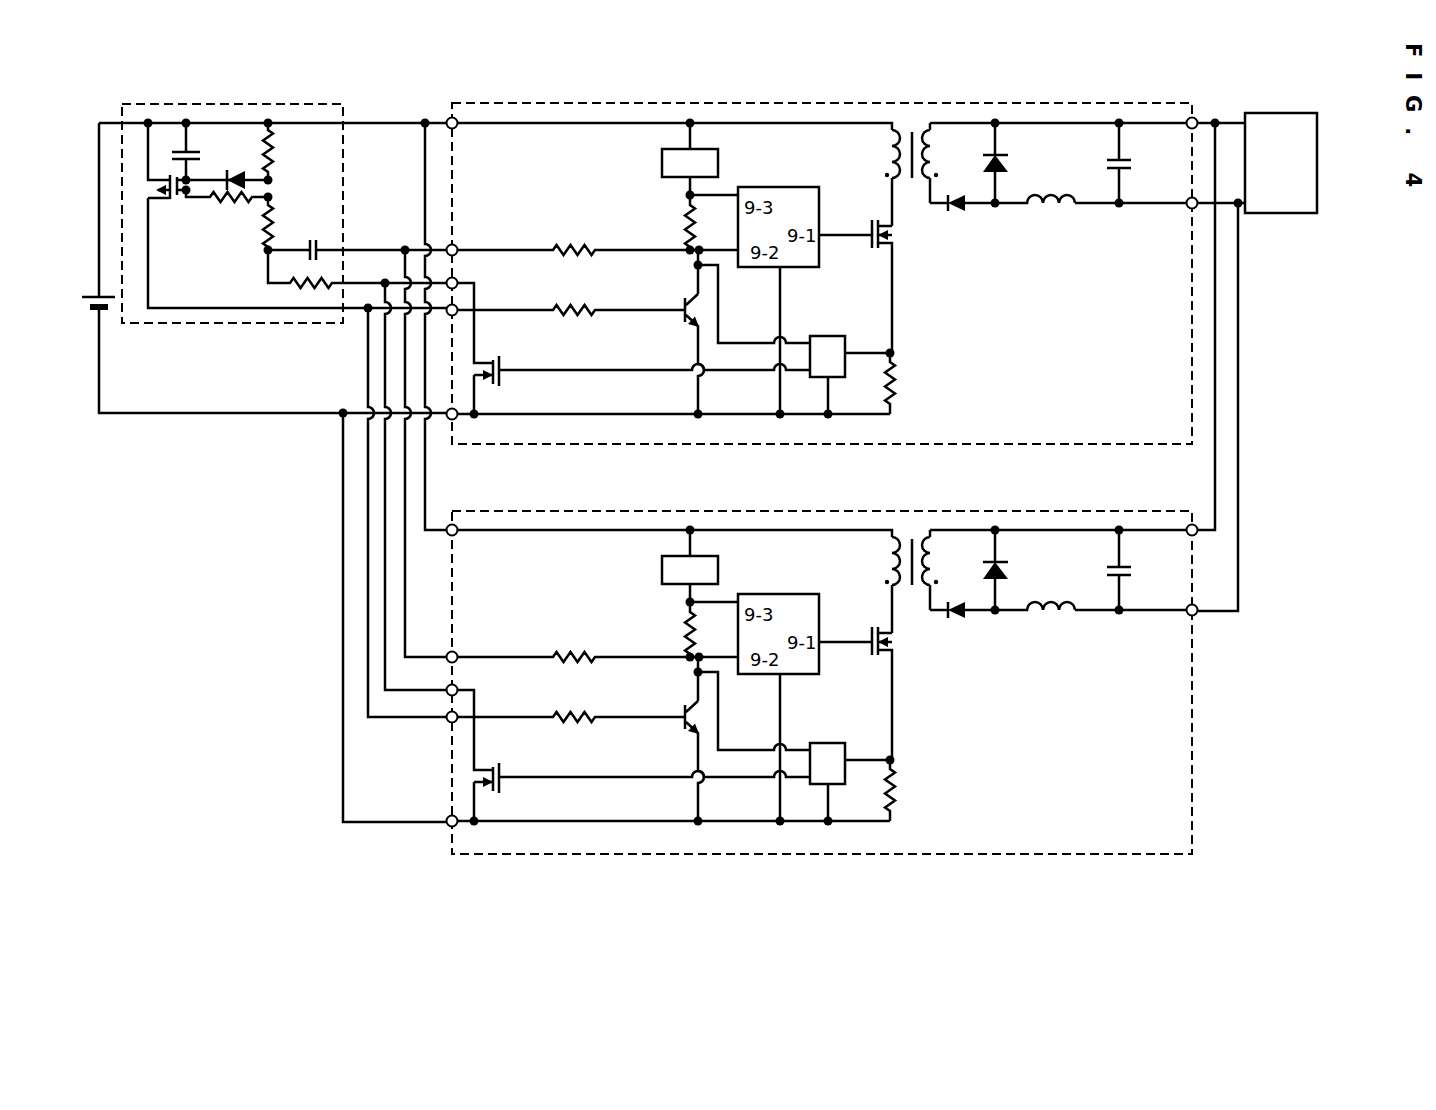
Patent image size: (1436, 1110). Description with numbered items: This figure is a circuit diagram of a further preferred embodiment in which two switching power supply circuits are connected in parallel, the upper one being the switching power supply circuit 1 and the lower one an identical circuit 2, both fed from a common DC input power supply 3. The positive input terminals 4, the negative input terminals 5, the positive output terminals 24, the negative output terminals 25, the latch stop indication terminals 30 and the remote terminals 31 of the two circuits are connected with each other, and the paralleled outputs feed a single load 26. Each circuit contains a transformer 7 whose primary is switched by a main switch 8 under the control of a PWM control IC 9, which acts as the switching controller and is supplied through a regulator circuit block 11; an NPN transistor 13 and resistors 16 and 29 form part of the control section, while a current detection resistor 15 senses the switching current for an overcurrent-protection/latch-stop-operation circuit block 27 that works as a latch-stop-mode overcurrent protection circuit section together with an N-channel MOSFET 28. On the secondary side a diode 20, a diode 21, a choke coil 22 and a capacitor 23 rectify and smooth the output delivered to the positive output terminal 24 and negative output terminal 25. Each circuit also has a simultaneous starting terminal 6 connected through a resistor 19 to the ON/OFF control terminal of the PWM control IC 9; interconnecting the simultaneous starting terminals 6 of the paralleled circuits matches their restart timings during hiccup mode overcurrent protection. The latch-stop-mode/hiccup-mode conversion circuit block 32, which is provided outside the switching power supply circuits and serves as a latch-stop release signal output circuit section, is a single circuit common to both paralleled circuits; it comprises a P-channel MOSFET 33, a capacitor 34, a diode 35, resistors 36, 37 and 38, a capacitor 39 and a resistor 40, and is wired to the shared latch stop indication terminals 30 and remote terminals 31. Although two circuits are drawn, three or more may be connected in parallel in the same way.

The switching power supply circuit 1 is at (775, 103).
The second power supply unit 2 is at (1195, 815).
The DC input power supply 3 is at (100, 313).
The positive input terminal 4 is at (474, 306).
The negative input terminal 5 is at (473, 632).
The simultaneous starting terminal 6 is at (474, 440).
The transformer 7 is at (911, 340).
The main switch 8 is at (872, 490).
The PWM control IC 9 is at (805, 403).
The regulator circuit block 11 is at (665, 362).
The NPN transistor 13 is at (665, 544).
The current detection resistor 15 is at (919, 587).
The resistor 16 is at (655, 426).
The resistor 19 is at (577, 429).
The diode 20 is at (962, 430).
The diode 21 is at (1018, 366).
The choke coil 22 is at (1035, 426).
The capacitor 23 is at (1148, 366).
The positive output terminal 24 is at (1193, 305).
The negative output terminal 25 is at (1170, 431).
The load 26 is at (1280, 215).
The overcurrent-protection/latch-stop-operation circuit block 27 is at (850, 554).
The N-channel MOSFET 28 is at (633, 552).
The resistor 29 is at (571, 490).
The latch stop indication terminal 30 is at (485, 473).
The remote terminal 31 is at (485, 500).
The latch-stop-mode/hiccup-mode conversion circuit block 32 is at (160, 104).
The P-channel MOSFET 33 is at (170, 200).
The capacitor 34 is at (197, 150).
The diode 35 is at (233, 170).
The resistor 36 is at (275, 147).
The resistor 37 is at (227, 208).
The resistor 38 is at (265, 220).
The capacitor 39 is at (310, 238).
The resistor 40 is at (300, 293).